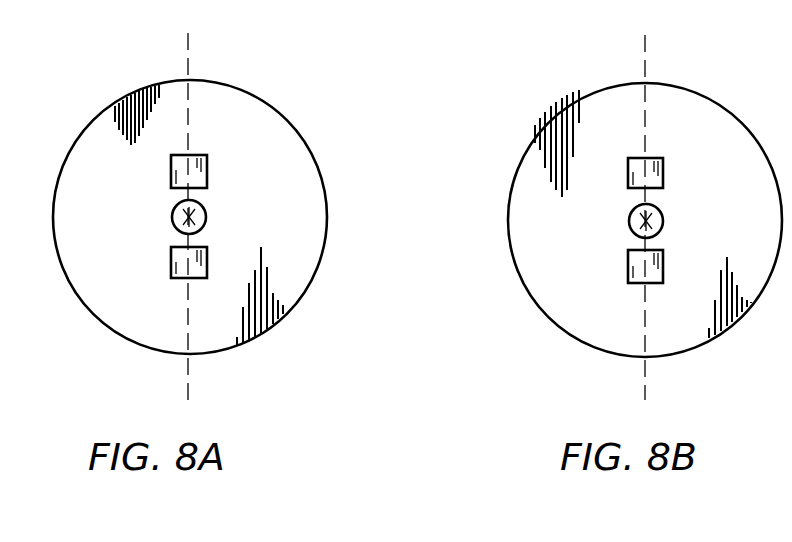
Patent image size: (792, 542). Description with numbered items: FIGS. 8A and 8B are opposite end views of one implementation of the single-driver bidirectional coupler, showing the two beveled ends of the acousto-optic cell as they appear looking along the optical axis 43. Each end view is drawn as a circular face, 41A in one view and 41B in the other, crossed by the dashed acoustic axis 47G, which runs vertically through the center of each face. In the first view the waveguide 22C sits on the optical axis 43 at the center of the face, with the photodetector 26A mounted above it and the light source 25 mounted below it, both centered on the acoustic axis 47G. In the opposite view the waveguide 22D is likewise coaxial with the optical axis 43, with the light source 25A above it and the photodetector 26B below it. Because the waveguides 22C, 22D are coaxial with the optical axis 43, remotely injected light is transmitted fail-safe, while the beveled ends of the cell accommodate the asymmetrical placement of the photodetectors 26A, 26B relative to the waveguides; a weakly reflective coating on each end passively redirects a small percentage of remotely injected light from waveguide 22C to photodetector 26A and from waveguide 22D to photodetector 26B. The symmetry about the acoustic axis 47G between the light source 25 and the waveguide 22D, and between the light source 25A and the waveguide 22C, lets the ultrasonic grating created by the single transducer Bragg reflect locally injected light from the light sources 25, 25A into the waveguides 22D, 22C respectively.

In FIG. 8A, the disc / field of view A 41A is at (98, 124).
In FIG. 8B, the disc / field of view B 41B is at (592, 106).
In FIG. 8A, the acoustic axis 47G is at (189, 45).
In FIG. 8B, the acoustic axis 47G is at (646, 50).
In FIG. 8A, the photodetector 26A is at (170, 166).
In FIG. 8B, the photodetector 26B is at (631, 282).
In FIG. 8A, the light source 25 is at (173, 277).
In FIG. 8B, the light source 25A is at (663, 172).
In FIG. 8A, the optical axis 43 is at (207, 211).
In FIG. 8B, the optical axis 43 is at (664, 220).
In FIG. 8A, the waveguide 22C is at (173, 223).
In FIG. 8B, the waveguide 22D is at (629, 226).